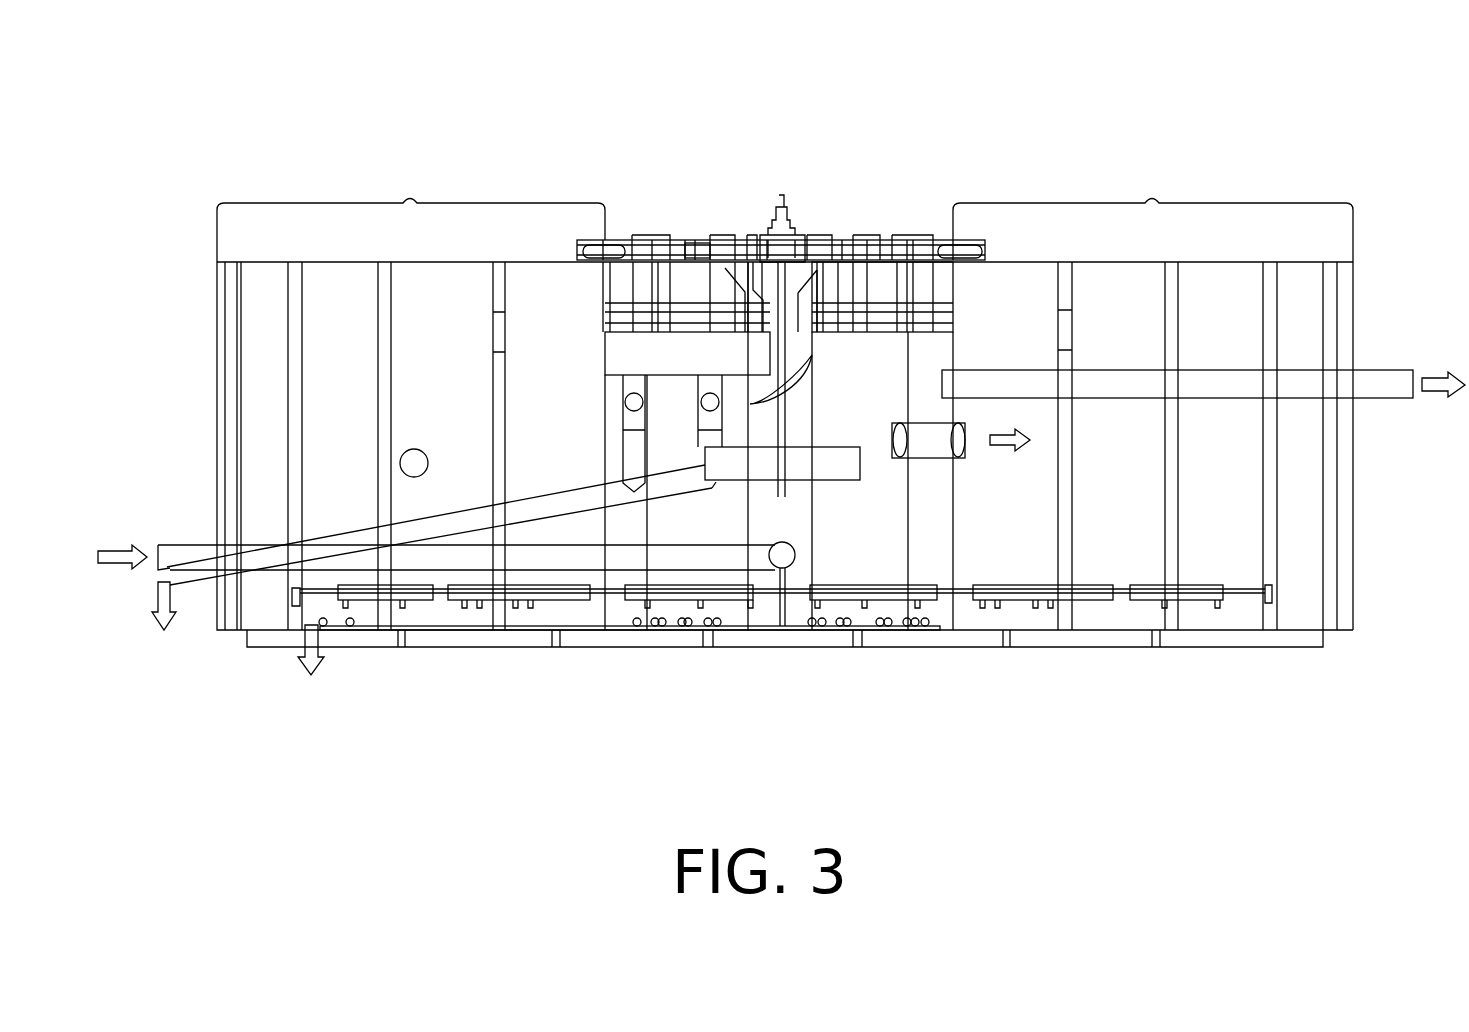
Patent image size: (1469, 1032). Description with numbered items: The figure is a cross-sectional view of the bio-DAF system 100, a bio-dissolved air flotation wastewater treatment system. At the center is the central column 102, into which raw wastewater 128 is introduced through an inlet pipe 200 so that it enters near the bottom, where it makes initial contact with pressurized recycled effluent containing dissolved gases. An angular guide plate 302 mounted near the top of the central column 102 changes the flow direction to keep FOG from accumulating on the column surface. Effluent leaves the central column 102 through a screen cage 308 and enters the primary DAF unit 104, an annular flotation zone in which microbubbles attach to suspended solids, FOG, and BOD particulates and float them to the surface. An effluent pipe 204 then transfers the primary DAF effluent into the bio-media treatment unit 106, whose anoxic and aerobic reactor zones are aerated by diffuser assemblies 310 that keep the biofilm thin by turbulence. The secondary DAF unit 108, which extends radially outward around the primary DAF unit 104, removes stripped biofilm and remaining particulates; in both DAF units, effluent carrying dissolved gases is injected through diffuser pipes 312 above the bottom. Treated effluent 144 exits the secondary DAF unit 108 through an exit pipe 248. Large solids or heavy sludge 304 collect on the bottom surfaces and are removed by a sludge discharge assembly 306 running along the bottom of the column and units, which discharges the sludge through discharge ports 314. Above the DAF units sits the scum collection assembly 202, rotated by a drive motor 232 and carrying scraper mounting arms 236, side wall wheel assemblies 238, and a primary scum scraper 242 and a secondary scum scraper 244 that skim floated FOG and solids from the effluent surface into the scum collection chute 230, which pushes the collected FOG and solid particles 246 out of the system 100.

The bio-DAF system 100 is at (275, 90).
The bio-media treatment unit 106 is at (432, 189).
The side wall wheel assemblies 238 is at (612, 236).
The scraper mounting arms 236 is at (690, 236).
The drive motor 232 is at (779, 193).
The scum collection assembly 202 is at (823, 236).
The secondary scum scraper 244 is at (927, 337).
The primary scum scraper 242 is at (835, 339).
The angular guide plate 302 is at (800, 397).
The screen cage 308 is at (803, 474).
The effluent pipe 204 is at (949, 449).
The secondary DAF unit 108 is at (647, 539).
The exit pipe 248 is at (1140, 396).
The treated effluent 144 is at (1440, 362).
The scum collection chute 230 is at (530, 478).
The raw wastewater 128 is at (123, 535).
The inlet pipe 200 is at (193, 528).
The collected FOG and solid particles 246 is at (172, 627).
The heavy sludge 304 is at (322, 675).
The discharge ports 314 is at (350, 642).
The diffuser pipes 312 is at (630, 602).
The sludge discharge assembly 306 is at (748, 634).
The diffuser assemblies 310 is at (425, 578).
The primary DAF unit 104 is at (727, 522).
The central column 102 is at (800, 530).